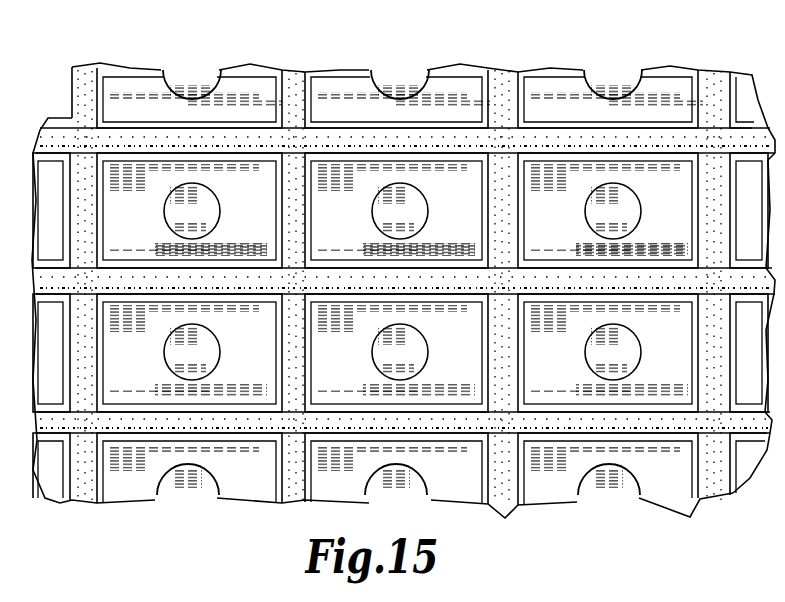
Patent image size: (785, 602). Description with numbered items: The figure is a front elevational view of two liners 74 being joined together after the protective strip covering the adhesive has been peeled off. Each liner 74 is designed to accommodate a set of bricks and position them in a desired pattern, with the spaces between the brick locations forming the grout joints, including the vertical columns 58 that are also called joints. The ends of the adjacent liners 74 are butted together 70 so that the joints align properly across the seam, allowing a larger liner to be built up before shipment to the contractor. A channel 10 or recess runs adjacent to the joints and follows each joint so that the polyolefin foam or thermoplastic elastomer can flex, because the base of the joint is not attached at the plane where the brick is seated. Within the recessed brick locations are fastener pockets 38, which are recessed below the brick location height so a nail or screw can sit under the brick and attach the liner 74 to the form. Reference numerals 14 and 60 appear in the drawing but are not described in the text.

The channel 10 is at (514, 290).
The mortar joint 14 is at (290, 368).
The fastener pocket 38 is at (610, 487).
The vertical columns 58 is at (80, 386).
The horizontal mortar joint 60 is at (683, 293).
The butt joint of adjacent liners 70 is at (563, 270).
The liner 74 is at (482, 65).